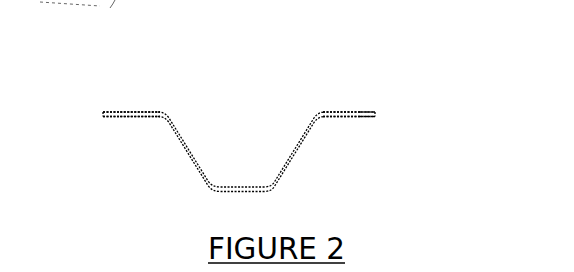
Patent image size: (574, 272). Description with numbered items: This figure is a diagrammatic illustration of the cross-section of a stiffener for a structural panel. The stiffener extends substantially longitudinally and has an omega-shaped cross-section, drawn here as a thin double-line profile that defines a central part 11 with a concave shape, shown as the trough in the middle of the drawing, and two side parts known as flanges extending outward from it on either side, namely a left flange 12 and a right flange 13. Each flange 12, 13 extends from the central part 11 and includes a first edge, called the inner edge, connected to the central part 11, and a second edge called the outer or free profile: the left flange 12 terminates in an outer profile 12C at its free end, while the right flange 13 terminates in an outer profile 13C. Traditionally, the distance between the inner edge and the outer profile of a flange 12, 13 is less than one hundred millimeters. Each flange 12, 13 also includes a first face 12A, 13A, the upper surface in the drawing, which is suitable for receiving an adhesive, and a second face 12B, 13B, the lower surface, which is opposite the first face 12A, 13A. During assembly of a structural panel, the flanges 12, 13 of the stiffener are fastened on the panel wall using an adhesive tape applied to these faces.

The central part 11 is at (217, 106).
The left flange 12 is at (127, 116).
The first face 12A is at (146, 105).
The second face 12B is at (146, 124).
The outer profile 12C is at (101, 110).
The right flange 13 is at (347, 117).
The first face 13A is at (323, 105).
The second face 13B is at (330, 124).
The outer profile 13C is at (378, 110).